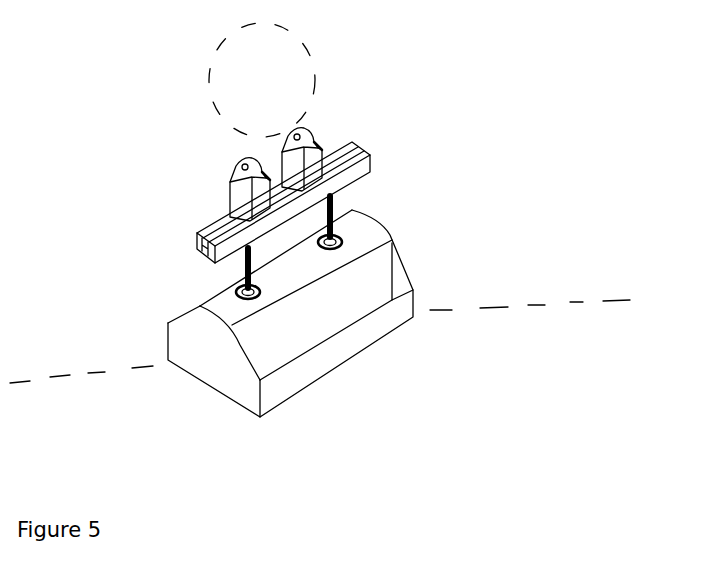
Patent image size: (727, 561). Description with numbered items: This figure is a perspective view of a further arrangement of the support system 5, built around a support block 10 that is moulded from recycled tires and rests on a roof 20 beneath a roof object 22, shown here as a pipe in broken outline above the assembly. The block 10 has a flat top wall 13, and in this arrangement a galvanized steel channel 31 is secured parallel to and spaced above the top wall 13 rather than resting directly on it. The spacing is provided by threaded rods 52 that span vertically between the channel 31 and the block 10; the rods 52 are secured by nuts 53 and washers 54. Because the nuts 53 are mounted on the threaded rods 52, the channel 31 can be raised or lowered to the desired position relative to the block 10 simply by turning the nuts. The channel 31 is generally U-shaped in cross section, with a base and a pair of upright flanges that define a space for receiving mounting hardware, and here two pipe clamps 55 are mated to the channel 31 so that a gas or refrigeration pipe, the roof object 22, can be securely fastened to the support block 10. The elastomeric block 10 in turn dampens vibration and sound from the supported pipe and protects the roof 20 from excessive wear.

The support system 5 is at (191, 417).
The support block 10 is at (323, 313).
The top wall 13 is at (205, 302).
The roof 20 is at (612, 302).
The roof object 22 is at (297, 37).
The galvanized steel channel 31 is at (356, 165).
The threaded rods 52 is at (343, 208).
The nuts 53 is at (345, 241).
The washers 54 is at (345, 250).
The pipe clamps 55 is at (246, 158).